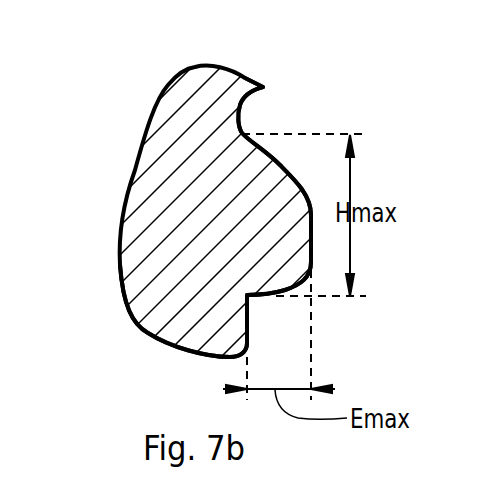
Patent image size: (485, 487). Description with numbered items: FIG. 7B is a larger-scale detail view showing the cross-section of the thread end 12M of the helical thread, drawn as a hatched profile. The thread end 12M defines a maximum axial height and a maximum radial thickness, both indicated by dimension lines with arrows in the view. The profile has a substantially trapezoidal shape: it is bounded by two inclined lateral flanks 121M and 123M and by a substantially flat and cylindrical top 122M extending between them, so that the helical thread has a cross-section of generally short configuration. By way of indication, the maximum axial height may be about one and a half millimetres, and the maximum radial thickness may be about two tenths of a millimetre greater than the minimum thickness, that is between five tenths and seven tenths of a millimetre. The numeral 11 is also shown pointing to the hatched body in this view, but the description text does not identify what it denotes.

The profiled section / seal body 11 is at (160, 183).
The inclined lateral flank 123M is at (267, 152).
The top 122M is at (307, 260).
The inclined lateral flank 121M is at (278, 290).
The thread end 12M is at (271, 246).